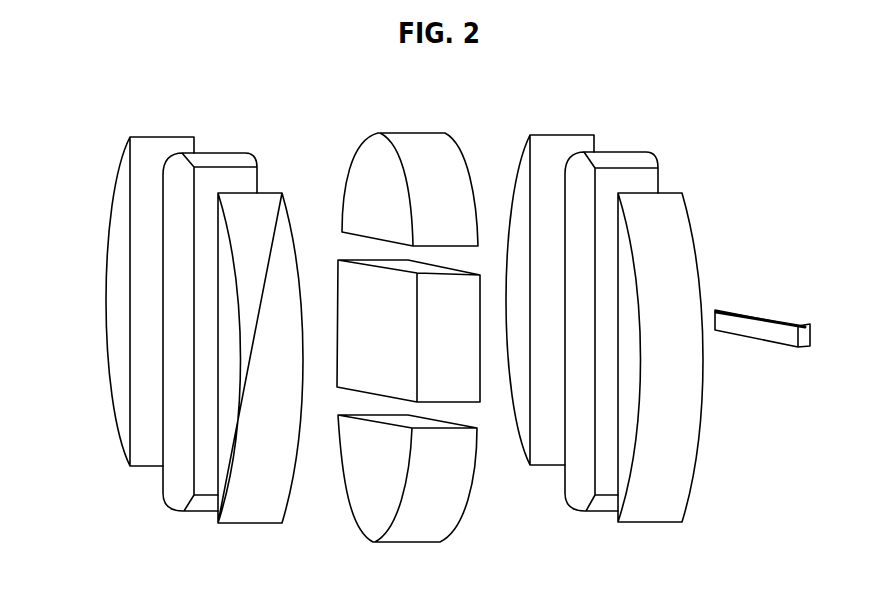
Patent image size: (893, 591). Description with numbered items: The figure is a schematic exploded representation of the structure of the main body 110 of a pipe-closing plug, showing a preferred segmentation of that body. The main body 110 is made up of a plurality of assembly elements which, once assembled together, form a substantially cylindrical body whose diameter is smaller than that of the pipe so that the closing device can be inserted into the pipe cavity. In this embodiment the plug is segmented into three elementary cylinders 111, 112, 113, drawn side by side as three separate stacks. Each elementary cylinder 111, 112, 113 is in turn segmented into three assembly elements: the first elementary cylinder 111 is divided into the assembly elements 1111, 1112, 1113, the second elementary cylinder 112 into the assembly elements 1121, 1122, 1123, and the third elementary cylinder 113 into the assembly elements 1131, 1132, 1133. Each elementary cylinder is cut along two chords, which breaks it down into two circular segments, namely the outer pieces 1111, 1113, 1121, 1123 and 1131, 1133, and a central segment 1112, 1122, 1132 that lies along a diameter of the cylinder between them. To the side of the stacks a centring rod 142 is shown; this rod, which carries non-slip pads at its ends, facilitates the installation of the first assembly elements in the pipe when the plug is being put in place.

The main body 110 is at (106, 84).
The elementary cylinder 111 is at (682, 123).
The elementary cylinder 112 is at (481, 112).
The elementary cylinder 113 is at (271, 122).
The assembly element 1111 is at (559, 152).
The assembly element 1112 is at (573, 473).
The assembly element 1113 is at (683, 457).
The assembly element 1121 is at (368, 172).
The assembly element 1122 is at (348, 303).
The assembly element 1123 is at (368, 510).
The assembly element 1131 is at (107, 328).
The assembly element 1132 is at (173, 363).
The assembly element 1133 is at (225, 427).
The centring rod 142 is at (760, 330).